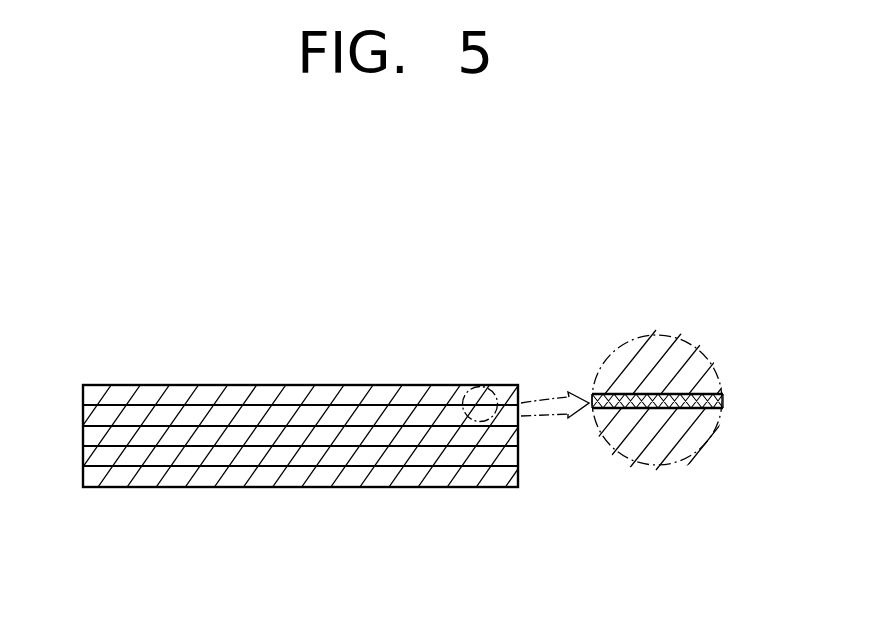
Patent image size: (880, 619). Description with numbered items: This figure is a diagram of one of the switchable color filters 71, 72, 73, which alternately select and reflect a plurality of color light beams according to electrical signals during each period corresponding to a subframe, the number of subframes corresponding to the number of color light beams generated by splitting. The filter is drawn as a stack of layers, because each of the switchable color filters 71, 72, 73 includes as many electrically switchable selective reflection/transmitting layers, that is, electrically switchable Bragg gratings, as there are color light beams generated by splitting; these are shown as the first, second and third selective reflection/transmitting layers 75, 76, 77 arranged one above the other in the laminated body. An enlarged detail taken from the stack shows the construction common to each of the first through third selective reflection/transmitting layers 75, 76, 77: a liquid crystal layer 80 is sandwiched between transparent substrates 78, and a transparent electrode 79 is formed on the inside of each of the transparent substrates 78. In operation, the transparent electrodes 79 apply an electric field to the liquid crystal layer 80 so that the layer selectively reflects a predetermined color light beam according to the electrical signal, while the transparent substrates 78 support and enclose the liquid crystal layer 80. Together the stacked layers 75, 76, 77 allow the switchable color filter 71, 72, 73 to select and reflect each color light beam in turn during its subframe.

The switchable color filter 71 is at (352, 373).
The switchable color filter 72 is at (352, 373).
The switchable color filter 73 is at (482, 349).
The first selective reflection/transmitting layer 75 is at (201, 406).
The second selective reflection/transmitting layer 76 is at (285, 418).
The third selective reflection/transmitting layer 77 is at (221, 468).
The transparent substrate 78 is at (82, 406).
The transparent electrode 79 is at (643, 395).
The liquid crystal layer 80 is at (723, 402).